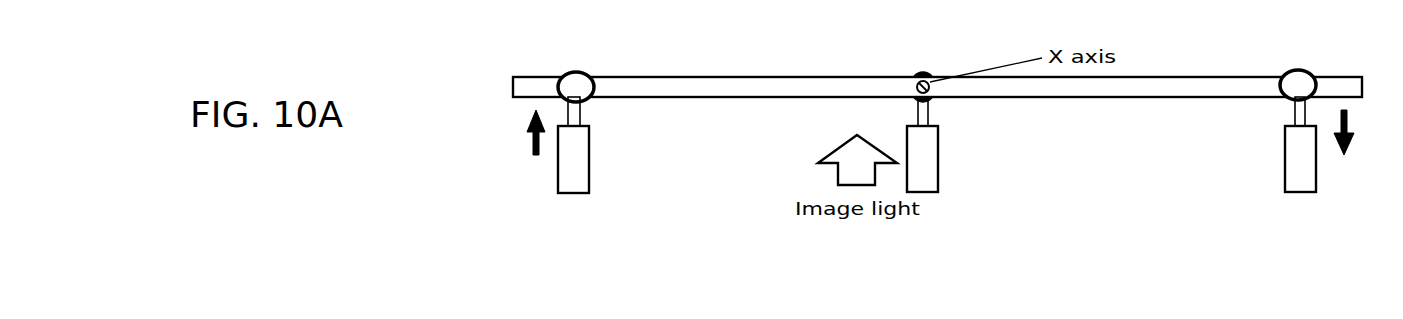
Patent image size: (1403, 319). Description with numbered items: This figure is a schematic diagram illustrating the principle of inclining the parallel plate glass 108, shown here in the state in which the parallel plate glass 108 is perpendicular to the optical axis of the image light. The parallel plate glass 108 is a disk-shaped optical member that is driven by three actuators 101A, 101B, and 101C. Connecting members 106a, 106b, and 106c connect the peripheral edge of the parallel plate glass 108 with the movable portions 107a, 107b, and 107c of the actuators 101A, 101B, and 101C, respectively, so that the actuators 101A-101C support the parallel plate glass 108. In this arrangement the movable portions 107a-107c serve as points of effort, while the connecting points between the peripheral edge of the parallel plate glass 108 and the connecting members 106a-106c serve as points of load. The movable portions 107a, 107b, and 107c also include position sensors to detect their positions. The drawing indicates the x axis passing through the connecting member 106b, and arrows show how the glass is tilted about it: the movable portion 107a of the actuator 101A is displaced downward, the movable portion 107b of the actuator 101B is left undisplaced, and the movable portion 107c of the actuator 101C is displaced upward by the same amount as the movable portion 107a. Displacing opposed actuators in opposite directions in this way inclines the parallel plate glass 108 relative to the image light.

The actuator 101A is at (1297, 165).
The actuator 101B is at (930, 162).
The actuator 101C is at (580, 162).
The connecting member 106a is at (1307, 68).
The connecting member 106b is at (933, 73).
The connecting member 106c is at (582, 70).
The movable portion 107a is at (1295, 112).
The movable portion 107b is at (925, 112).
The movable portion 107c is at (575, 112).
The parallel plate glass 108 is at (737, 77).